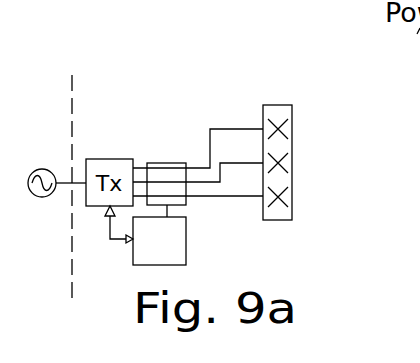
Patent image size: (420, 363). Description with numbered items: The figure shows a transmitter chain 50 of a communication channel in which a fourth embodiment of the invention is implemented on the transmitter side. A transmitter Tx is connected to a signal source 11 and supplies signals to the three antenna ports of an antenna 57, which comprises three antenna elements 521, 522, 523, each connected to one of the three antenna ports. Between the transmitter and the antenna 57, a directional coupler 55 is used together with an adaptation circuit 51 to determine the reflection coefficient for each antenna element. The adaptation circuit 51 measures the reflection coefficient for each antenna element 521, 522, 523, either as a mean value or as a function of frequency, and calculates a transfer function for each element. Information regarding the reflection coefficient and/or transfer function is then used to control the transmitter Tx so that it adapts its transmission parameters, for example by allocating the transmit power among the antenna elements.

The transmitter chain 50 is at (202, 68).
The signal source 11 is at (44, 197).
The directional coupler 55 is at (148, 165).
The adaptation circuit 51 is at (145, 235).
The antenna 57 is at (288, 110).
The antenna element 521 is at (286, 133).
The antenna element 522 is at (286, 170).
The antenna element 523 is at (286, 203).